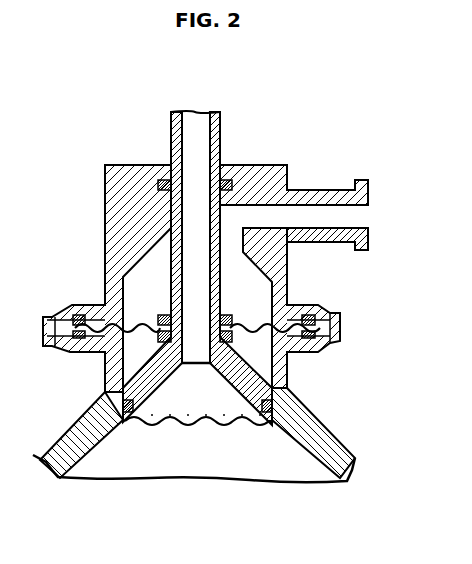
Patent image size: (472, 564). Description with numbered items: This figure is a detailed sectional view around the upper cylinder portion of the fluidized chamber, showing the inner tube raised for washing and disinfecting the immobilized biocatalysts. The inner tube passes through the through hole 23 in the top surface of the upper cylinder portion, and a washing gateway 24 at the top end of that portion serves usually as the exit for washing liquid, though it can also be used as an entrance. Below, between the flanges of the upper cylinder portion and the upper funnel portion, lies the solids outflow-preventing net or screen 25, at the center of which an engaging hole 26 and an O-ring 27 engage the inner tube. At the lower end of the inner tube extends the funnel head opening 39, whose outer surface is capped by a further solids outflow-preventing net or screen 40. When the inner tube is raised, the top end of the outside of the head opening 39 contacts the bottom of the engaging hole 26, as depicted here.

The through hole 23 is at (222, 162).
The washing gateway 24 is at (334, 197).
The solids outflow-preventing net or screen 25 is at (235, 346).
The engaging hole 26 is at (232, 306).
The O-ring 27 is at (292, 392).
The funnel head opening 39 is at (157, 400).
The solids outflow-preventing net or screen 40 is at (221, 423).